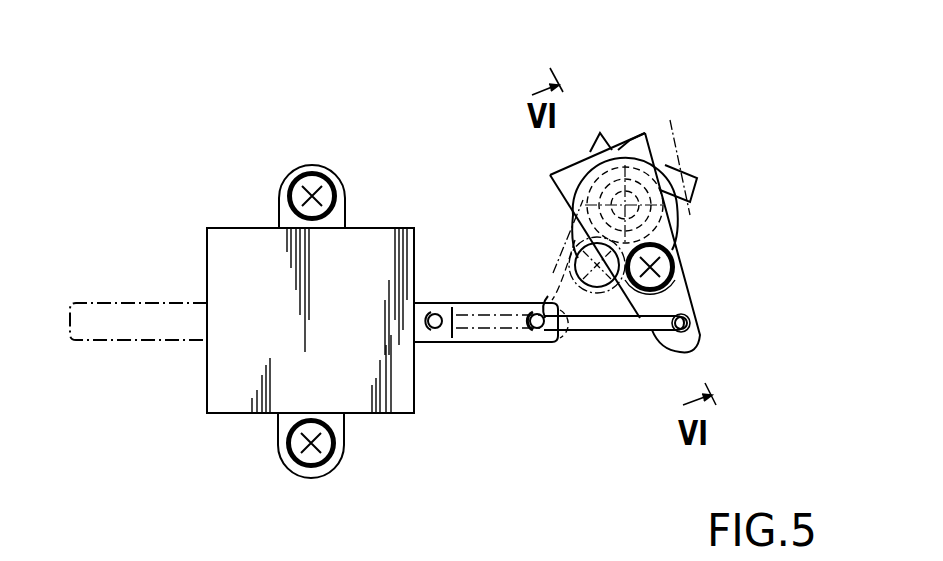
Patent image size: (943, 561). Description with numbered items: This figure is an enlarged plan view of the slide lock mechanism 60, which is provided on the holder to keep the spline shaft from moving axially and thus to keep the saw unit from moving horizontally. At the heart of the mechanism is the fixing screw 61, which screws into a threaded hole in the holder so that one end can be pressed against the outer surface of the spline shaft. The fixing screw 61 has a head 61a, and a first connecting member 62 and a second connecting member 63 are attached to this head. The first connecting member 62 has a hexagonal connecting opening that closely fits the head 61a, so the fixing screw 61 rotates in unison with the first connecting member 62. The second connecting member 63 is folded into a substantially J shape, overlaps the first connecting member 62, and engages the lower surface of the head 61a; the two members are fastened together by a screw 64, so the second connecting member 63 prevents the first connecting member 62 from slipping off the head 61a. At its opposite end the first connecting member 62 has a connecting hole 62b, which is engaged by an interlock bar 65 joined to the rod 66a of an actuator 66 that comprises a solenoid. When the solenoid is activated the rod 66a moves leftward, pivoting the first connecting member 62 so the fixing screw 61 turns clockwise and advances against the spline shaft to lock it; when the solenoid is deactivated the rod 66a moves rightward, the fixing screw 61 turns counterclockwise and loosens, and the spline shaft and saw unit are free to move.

The slide lock mechanism 60 is at (407, 176).
The fixing screw 61 is at (625, 208).
The head 61a is at (648, 158).
The first connecting member 62 is at (700, 298).
The connecting hole 62b is at (688, 332).
The second connecting member 63 is at (585, 142).
The screw 64 is at (664, 266).
The interlock bar 65 is at (623, 333).
The actuator 66 is at (250, 243).
The rod 66a is at (118, 303).